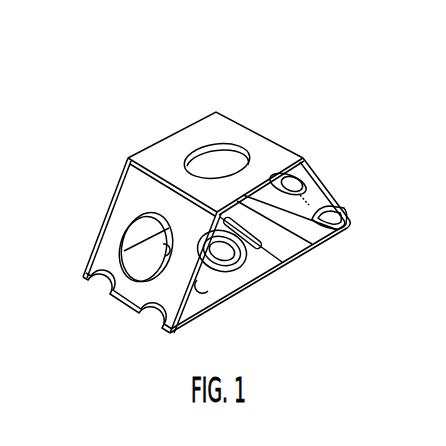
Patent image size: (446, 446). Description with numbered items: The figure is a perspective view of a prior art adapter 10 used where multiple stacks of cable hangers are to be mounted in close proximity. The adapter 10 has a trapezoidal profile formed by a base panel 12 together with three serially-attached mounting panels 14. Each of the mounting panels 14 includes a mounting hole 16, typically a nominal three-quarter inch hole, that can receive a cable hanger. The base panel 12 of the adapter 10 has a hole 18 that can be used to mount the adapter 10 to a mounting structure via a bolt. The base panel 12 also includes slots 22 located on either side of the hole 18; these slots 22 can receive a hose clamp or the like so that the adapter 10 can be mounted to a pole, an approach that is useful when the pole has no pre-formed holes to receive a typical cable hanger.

The adapter 10 is at (200, 201).
The base panel 12 is at (277, 262).
The mounting panels 14 is at (152, 153).
The mounting hole 16 is at (220, 168).
The hole 18 is at (243, 257).
The slots 22 is at (305, 250).